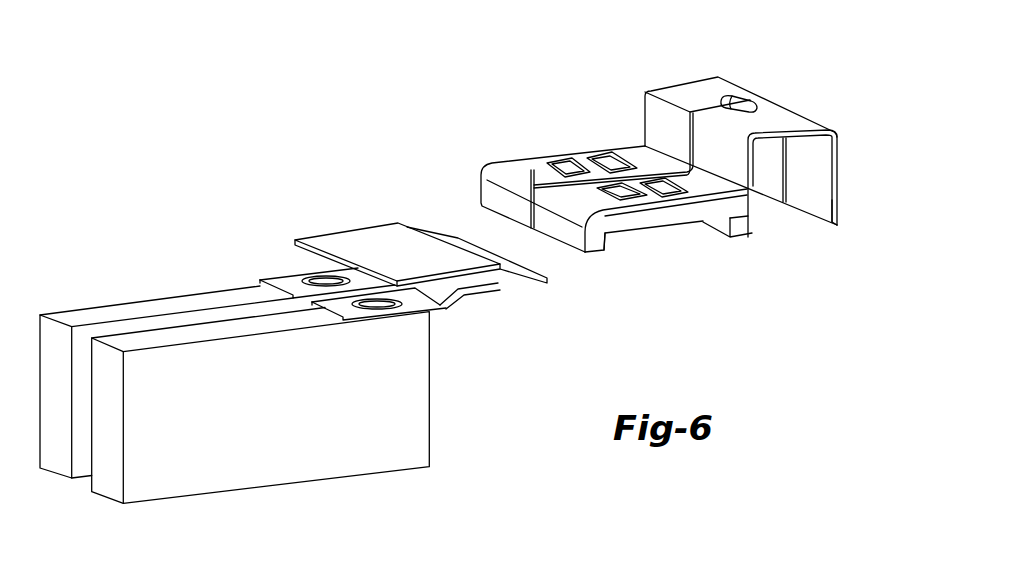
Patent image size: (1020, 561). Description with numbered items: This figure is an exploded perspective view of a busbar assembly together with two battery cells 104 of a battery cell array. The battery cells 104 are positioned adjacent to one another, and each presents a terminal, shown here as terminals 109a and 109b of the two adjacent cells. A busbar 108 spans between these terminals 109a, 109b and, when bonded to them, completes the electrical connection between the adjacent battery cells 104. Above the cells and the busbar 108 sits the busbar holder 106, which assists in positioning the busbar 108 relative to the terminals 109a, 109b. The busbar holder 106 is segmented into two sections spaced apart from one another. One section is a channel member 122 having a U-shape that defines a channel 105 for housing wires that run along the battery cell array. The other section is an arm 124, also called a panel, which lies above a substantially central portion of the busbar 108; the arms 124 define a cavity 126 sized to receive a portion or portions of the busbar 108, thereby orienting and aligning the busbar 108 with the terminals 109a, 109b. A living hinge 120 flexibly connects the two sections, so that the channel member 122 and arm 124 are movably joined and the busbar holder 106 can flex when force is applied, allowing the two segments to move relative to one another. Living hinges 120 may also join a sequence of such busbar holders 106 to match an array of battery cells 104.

The battery cell 104 is at (108, 313).
The channel 105 is at (816, 200).
The busbar holder 106 is at (669, 145).
The busbar 108 is at (465, 266).
The terminal 109a is at (438, 303).
The terminal 109b is at (272, 281).
The living hinge 120 is at (744, 94).
The channel member 122 is at (693, 93).
The arm 124 is at (627, 157).
The cavity 126 is at (659, 226).